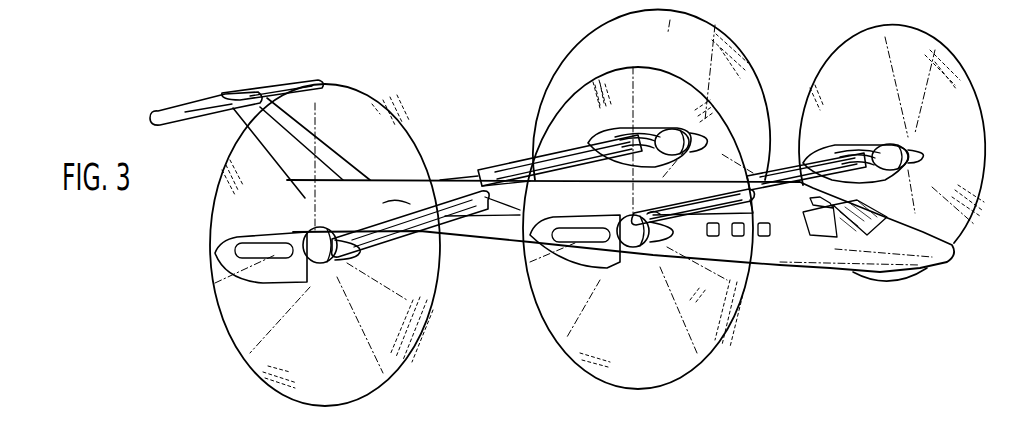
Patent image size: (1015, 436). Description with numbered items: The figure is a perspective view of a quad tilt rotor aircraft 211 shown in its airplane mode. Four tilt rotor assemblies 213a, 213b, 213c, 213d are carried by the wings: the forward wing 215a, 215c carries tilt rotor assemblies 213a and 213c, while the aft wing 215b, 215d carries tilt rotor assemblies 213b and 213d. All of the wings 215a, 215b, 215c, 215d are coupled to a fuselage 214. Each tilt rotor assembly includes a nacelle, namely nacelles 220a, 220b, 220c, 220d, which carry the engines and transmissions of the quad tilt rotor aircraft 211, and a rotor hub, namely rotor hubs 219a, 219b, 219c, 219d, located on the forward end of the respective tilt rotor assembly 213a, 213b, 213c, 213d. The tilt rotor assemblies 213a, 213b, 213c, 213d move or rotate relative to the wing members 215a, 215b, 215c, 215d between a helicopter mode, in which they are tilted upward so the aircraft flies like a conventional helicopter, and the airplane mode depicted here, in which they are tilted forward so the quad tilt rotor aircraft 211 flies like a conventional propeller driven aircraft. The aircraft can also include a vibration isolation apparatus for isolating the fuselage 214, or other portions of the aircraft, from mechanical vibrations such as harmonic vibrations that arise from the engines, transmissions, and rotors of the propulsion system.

The quad tilt rotor aircraft 211 is at (517, 62).
The tilt rotor assembly 213a is at (887, 121).
The tilt rotor assembly 213b is at (655, 114).
The tilt rotor assembly 213c is at (600, 276).
The tilt rotor assembly 213d is at (196, 275).
The fuselage 214 is at (818, 257).
The forward wing 215a is at (783, 178).
The aft wing 215b is at (517, 168).
The forward wing 215c is at (637, 198).
The aft wing 215d is at (440, 180).
The rotor hub 219a is at (908, 143).
The rotor hub 219b is at (693, 133).
The rotor hub 219c is at (650, 252).
The rotor hub 219d is at (332, 263).
The nacelle 220a is at (848, 143).
The nacelle 220b is at (590, 142).
The nacelle 220c is at (580, 253).
The nacelle 220d is at (265, 280).